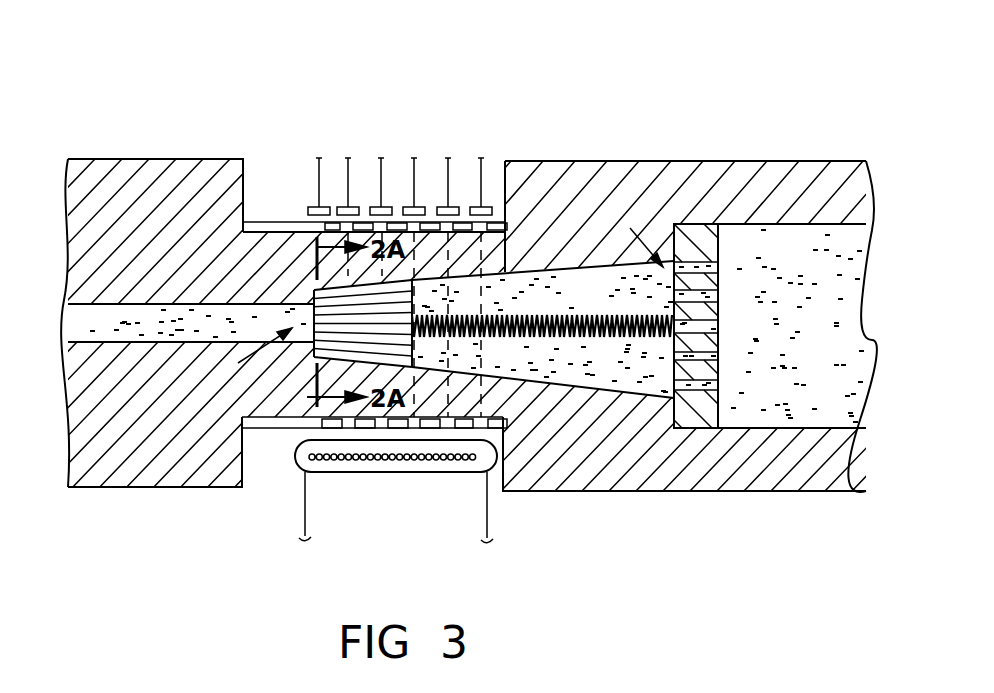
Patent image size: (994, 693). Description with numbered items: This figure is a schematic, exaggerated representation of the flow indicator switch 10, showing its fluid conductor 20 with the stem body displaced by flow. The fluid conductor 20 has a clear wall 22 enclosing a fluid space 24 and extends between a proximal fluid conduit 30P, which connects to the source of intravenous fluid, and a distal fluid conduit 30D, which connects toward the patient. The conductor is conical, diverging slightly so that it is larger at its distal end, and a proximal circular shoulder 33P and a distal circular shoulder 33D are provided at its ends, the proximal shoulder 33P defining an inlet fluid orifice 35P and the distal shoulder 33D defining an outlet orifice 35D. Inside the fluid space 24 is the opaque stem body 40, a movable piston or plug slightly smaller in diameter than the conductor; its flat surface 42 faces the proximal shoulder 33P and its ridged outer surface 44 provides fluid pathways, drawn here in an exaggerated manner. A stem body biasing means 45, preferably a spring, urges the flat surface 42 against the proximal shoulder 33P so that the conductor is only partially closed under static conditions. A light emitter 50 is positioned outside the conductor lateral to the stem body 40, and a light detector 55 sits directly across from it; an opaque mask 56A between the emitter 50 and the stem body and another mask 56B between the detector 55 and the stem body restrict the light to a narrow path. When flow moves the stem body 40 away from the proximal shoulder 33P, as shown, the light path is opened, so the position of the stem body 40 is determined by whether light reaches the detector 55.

The flow indicator switch 10 is at (453, 135).
The fluid conductor 20 is at (560, 395).
The clear wall 22 is at (583, 263).
The fluid space 24 is at (601, 303).
The proximal fluid conduit 30P is at (103, 312).
The distal fluid conduit 30D is at (780, 415).
The proximal circular shoulder 33P is at (312, 318).
The distal circular shoulder 33D is at (673, 247).
The inlet fluid orifice 35P is at (241, 358).
The outlet orifice 35D is at (631, 235).
The stem body 40 is at (397, 343).
The flat surface 42 is at (313, 292).
The outer surface 44 is at (332, 282).
The stem body biasing means 45 is at (580, 338).
The light emitter 50 is at (393, 473).
The light detector 55 is at (328, 207).
The opaque mask 56A is at (285, 423).
The mask 56B is at (293, 222).